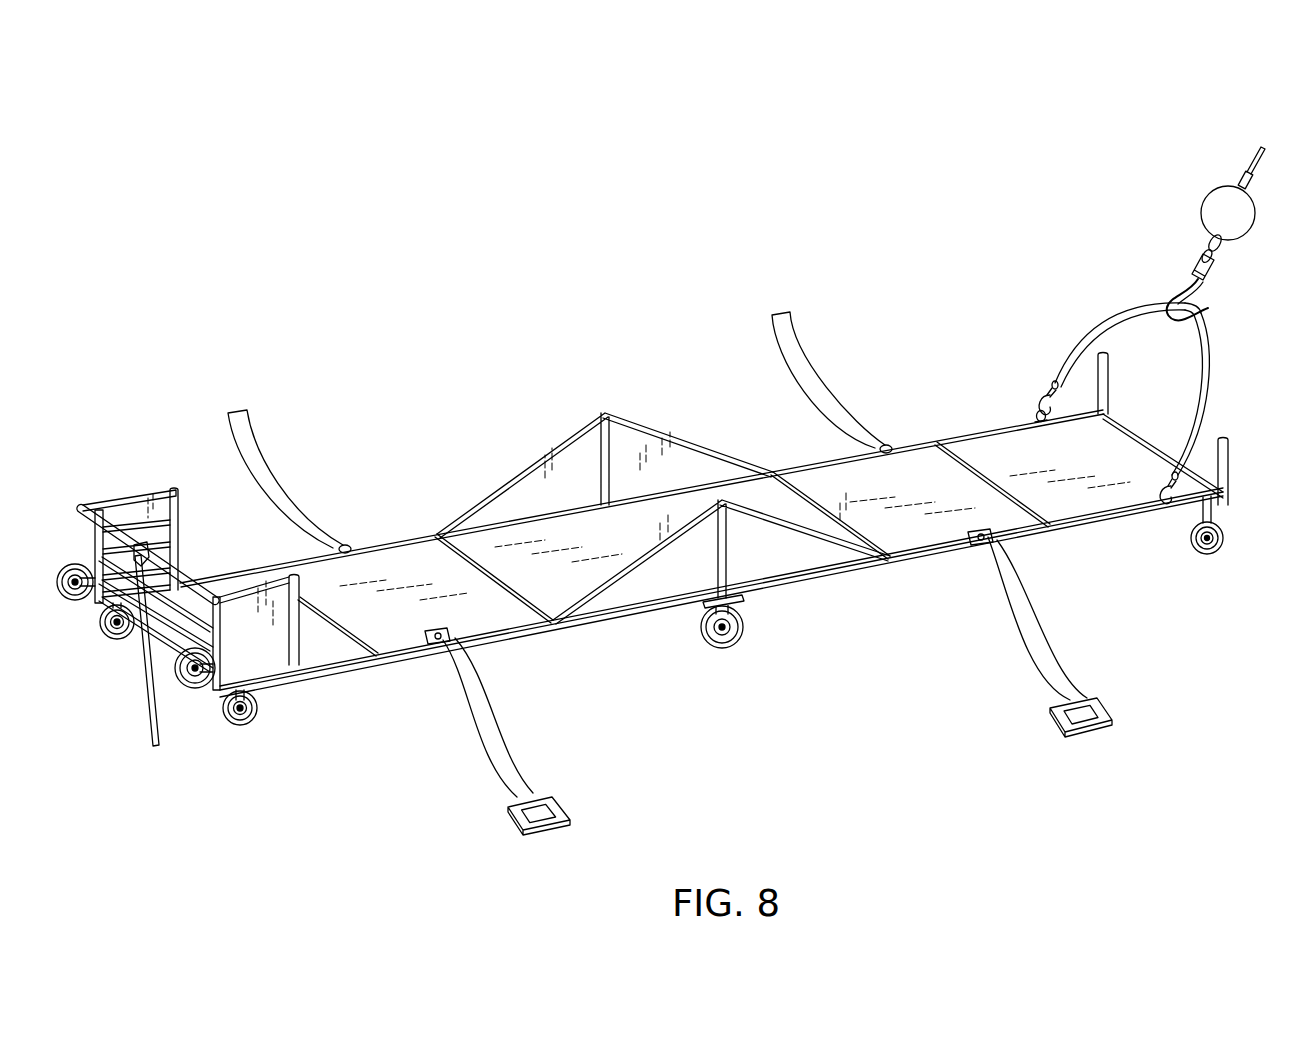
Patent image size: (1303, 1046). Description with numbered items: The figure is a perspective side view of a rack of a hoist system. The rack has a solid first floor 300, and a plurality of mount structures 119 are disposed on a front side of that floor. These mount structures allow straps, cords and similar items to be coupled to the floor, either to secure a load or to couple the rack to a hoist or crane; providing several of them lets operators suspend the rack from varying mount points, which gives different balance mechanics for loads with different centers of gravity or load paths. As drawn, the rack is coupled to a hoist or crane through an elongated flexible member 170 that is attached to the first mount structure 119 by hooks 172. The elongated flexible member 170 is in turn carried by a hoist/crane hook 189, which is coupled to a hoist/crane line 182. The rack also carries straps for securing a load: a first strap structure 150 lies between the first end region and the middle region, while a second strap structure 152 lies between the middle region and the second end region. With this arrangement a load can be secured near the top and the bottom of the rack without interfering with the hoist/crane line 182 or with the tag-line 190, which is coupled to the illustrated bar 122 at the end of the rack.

The bar 122 is at (86, 517).
The tag-line 190 is at (150, 690).
The second strap structure 152 is at (310, 463).
The first strap structure 150 is at (859, 381).
The solid first floor 300 is at (412, 553).
The mount structure 119 is at (1034, 412).
The hooks 172 is at (1037, 370).
The elongated flexible member 170 is at (1094, 328).
The hoist/crane hook 189 is at (1175, 291).
The hoist/crane line 182 is at (1256, 157).